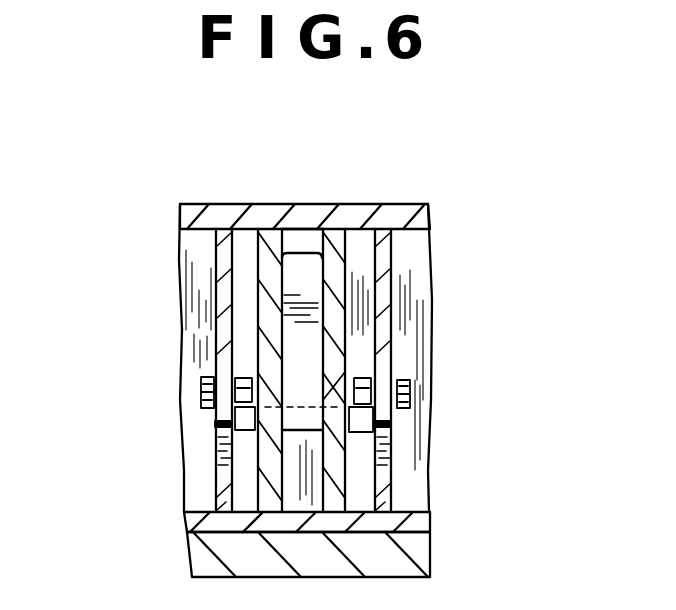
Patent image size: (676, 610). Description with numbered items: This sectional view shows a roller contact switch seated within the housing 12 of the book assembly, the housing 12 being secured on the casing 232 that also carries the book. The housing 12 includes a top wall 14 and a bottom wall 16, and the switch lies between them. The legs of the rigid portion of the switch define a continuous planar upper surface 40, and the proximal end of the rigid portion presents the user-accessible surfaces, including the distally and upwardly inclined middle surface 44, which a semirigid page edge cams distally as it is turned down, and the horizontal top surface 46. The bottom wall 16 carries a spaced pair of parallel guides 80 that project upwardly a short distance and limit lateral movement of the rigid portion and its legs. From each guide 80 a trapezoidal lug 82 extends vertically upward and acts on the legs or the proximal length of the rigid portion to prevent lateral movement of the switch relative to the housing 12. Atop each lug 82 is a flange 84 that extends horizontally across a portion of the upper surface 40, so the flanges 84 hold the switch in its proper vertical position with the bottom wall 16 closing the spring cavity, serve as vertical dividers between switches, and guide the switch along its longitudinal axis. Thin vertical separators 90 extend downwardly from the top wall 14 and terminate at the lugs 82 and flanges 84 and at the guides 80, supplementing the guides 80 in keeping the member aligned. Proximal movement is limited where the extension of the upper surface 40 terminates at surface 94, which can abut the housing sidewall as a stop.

The housing 12 is at (176, 206).
The top wall 14 is at (397, 213).
The bottom wall 16 is at (407, 525).
The casing 232 is at (418, 560).
The upper surface 40 is at (260, 402).
The inclined middle surface 44 is at (258, 275).
The horizontal top surface 46 is at (294, 229).
The guides 80 is at (228, 491).
The lug 82 is at (215, 452).
The flange 84 is at (201, 382).
The vertical separators 90 is at (217, 305).
The surface 94 is at (215, 424).